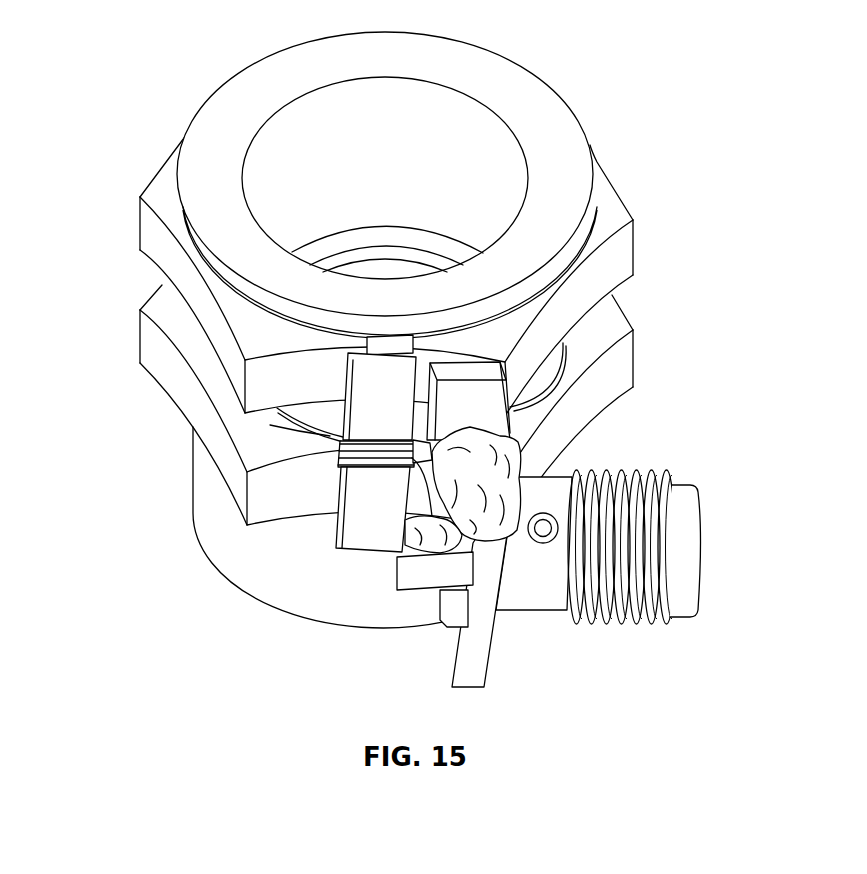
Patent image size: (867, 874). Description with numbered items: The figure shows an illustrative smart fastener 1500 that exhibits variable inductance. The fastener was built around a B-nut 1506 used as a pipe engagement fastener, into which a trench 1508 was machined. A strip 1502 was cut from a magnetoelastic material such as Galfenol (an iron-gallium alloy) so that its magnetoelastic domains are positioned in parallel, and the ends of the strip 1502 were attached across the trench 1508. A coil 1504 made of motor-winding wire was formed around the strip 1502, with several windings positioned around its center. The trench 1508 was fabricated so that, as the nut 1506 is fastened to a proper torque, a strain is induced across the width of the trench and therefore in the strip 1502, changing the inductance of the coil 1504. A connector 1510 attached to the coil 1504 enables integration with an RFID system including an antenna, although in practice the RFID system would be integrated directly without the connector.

The smart fastener 1500 is at (172, 70).
The strip 1502 is at (384, 505).
The coil 1504 is at (347, 453).
The B-nut 1506 is at (150, 218).
The trench 1508 is at (266, 427).
The connector 1510 is at (690, 498).